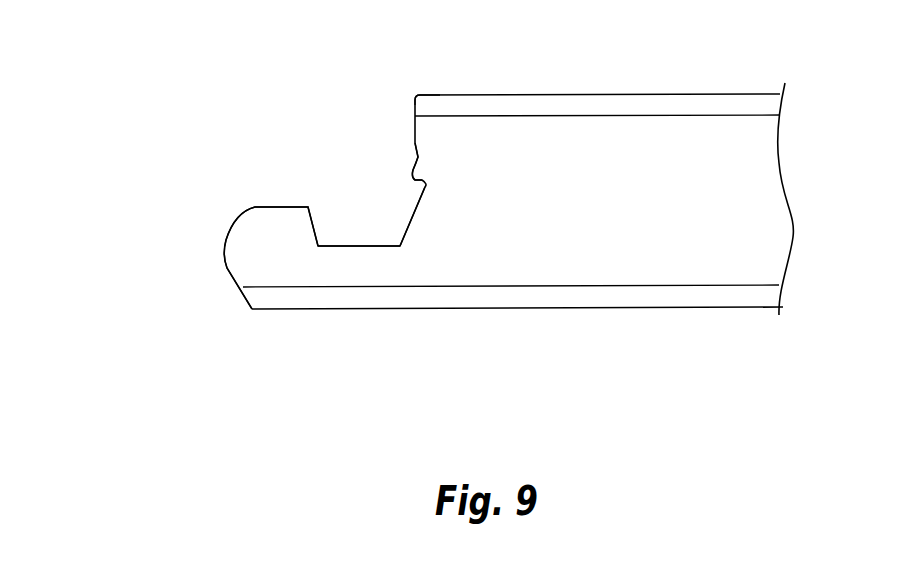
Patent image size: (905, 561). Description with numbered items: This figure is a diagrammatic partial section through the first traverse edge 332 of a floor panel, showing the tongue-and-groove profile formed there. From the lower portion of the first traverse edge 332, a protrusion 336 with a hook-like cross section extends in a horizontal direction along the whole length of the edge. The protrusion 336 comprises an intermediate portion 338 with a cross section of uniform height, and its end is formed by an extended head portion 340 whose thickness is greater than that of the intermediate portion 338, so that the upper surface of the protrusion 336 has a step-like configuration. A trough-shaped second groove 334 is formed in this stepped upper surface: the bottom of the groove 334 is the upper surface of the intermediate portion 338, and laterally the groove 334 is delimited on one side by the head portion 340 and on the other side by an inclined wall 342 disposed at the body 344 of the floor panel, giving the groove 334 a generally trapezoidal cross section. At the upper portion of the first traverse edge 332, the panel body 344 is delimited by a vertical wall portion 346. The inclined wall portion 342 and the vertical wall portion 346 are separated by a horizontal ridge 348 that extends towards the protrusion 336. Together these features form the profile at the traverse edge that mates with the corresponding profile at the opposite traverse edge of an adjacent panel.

The first traverse edge 332 is at (274, 355).
The second groove 334 is at (344, 156).
The protrusion 336 is at (210, 255).
The intermediate portion 338 is at (365, 274).
The head portion 340 is at (257, 222).
The inclined wall 342 is at (413, 222).
The body 344 is at (705, 212).
The vertical wall portion 346 is at (413, 118).
The horizontal ridge 348 is at (418, 175).